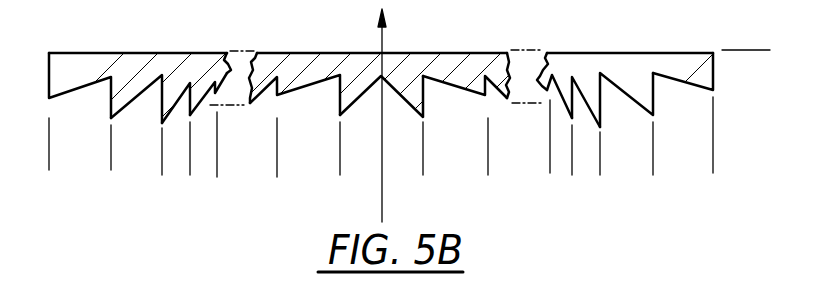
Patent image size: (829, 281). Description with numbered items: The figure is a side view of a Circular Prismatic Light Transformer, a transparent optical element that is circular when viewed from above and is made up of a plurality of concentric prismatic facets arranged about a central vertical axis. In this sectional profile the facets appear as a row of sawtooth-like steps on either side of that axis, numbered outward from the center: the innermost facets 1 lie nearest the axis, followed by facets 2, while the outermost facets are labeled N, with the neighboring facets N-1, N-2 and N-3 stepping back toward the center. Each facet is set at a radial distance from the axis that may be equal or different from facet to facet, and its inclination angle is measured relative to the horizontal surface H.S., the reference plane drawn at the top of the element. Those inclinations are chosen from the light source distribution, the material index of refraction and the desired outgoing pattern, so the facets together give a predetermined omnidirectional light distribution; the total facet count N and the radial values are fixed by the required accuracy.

The total number of facets N is at (381, 111).
The tooth N-1 is at (382, 121).
The tooth N-2 is at (177, 172).
The tooth N-3 is at (207, 168).
The central tooth 1 is at (381, 122).
The tooth 2 is at (378, 122).
The horizontal surface H.S. is at (746, 36).